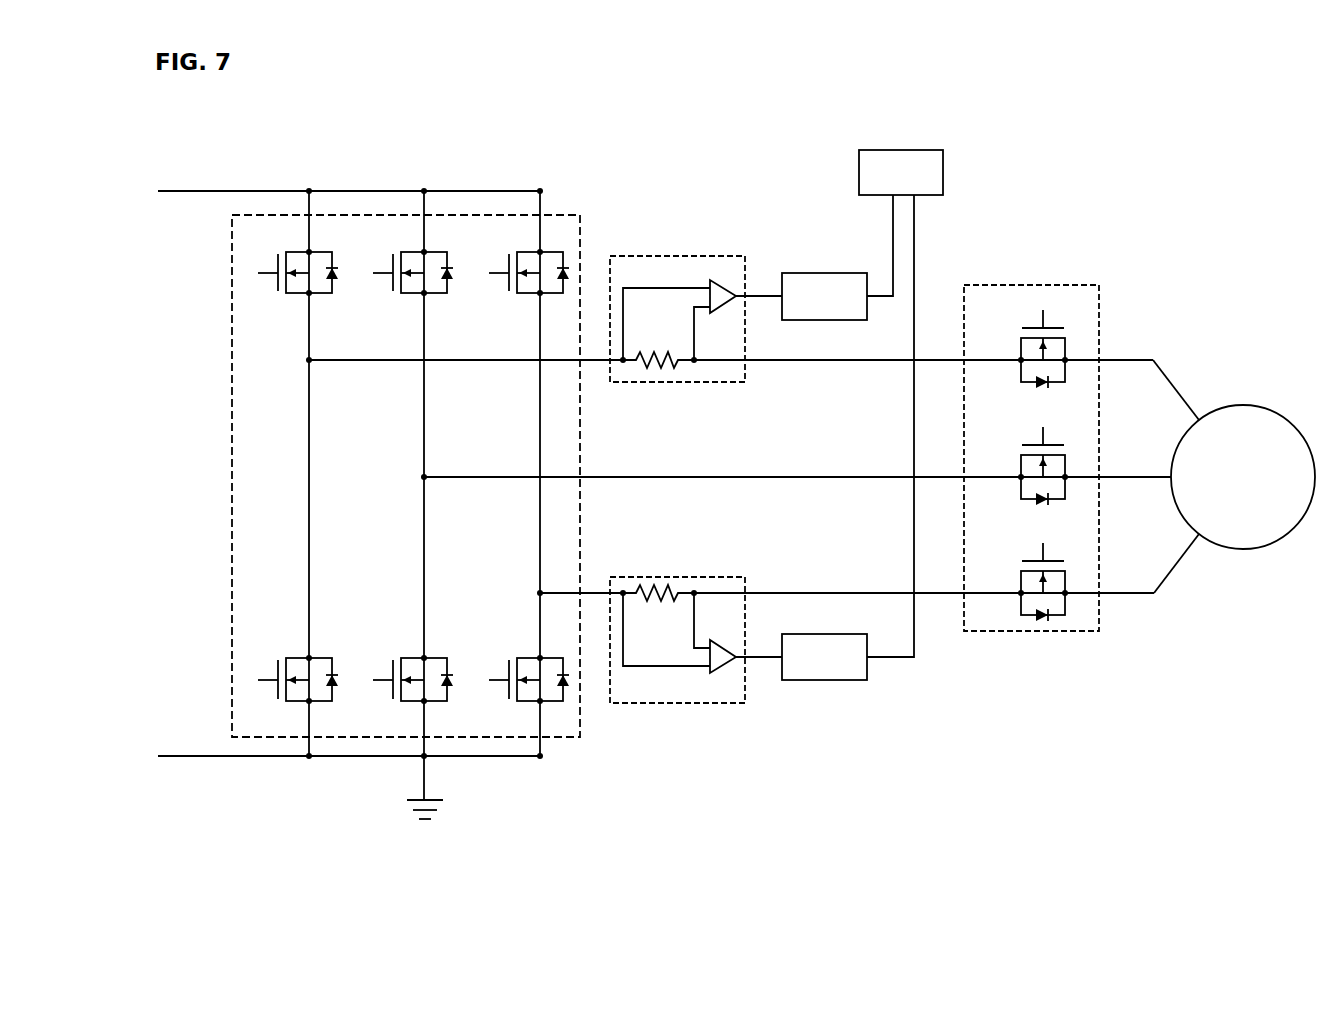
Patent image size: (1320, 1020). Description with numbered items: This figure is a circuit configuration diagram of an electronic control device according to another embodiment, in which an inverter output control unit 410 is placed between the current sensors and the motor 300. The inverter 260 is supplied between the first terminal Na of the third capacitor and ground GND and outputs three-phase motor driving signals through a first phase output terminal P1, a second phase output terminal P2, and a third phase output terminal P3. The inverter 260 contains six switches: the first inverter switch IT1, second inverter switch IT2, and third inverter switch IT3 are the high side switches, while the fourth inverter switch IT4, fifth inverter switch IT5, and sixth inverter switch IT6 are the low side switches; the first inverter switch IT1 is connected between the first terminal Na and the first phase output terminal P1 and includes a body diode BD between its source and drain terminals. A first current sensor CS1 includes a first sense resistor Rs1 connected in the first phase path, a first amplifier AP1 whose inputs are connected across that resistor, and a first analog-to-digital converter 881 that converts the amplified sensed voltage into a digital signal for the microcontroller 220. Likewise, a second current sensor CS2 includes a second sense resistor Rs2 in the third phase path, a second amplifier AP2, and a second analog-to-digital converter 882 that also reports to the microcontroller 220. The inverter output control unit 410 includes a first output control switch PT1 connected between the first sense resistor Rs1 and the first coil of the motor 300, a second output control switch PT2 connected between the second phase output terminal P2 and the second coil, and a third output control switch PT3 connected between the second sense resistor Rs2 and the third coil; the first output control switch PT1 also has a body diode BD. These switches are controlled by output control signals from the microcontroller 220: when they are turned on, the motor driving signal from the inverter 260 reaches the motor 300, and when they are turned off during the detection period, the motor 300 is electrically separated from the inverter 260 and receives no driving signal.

The first terminal of the third capacitor Na is at (190, 190).
The inverter 260 is at (578, 213).
The first inverter switch IT1 is at (292, 259).
The second inverter switch IT2 is at (410, 259).
The third inverter switch IT3 is at (525, 259).
The fourth inverter switch IT4 is at (295, 694).
The fifth inverter switch IT5 is at (410, 694).
The sixth inverter switch IT6 is at (525, 694).
The body diode BD is at (701, 342).
The first phase output terminal P1 is at (311, 363).
The second phase output terminal P2 is at (422, 476).
The third phase output terminal P3 is at (538, 592).
The first current sensor CS1 is at (677, 287).
The second current sensor CS2 is at (677, 669).
The first sense resistor Rs1 is at (658, 345).
The second sense resistor Rs2 is at (658, 608).
The first amplifier AP1 is at (679, 309).
The second amplifier AP2 is at (679, 648).
The first analog-to-digital converter 881 is at (812, 273).
The second analog-to-digital converter 882 is at (830, 682).
The microcontroller 220 is at (945, 170).
The inverter output control unit 410 is at (1031, 285).
The first output control switch PT1 is at (1025, 344).
The second output control switch PT2 is at (1025, 464).
The third output control switch PT3 is at (1025, 580).
The motor 300 is at (1243, 549).
The ground GND is at (425, 802).